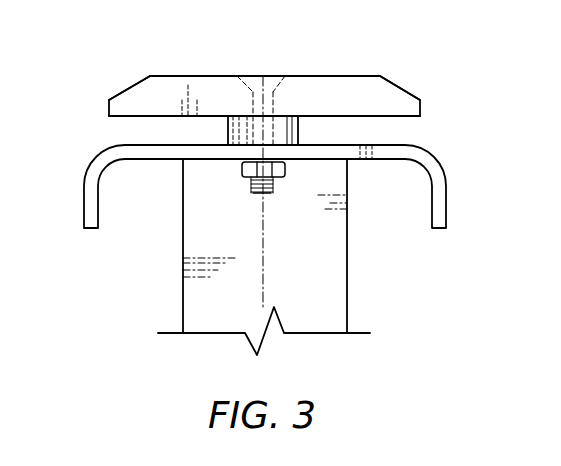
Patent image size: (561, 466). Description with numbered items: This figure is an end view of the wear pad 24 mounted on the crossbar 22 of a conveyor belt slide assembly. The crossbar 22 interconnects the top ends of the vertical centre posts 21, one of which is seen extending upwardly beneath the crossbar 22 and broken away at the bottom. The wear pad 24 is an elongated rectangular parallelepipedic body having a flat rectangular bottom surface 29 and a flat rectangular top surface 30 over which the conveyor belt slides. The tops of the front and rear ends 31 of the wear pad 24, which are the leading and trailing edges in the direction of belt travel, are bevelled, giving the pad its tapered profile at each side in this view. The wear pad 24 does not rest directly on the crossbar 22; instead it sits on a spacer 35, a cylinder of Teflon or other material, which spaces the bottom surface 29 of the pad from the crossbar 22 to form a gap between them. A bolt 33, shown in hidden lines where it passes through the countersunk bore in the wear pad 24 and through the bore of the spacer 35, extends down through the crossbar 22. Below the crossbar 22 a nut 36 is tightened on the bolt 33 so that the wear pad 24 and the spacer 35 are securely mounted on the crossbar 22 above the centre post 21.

The vertical centre post 21 is at (327, 288).
The crossbar 22 is at (447, 197).
The wear pad 24 is at (410, 106).
The bottom surface 29 is at (357, 117).
The top surface 30 is at (358, 76).
The front and rear ends 31 is at (125, 92).
The bolt 33 is at (255, 197).
The spacer 35 is at (228, 125).
The nut 36 is at (284, 178).